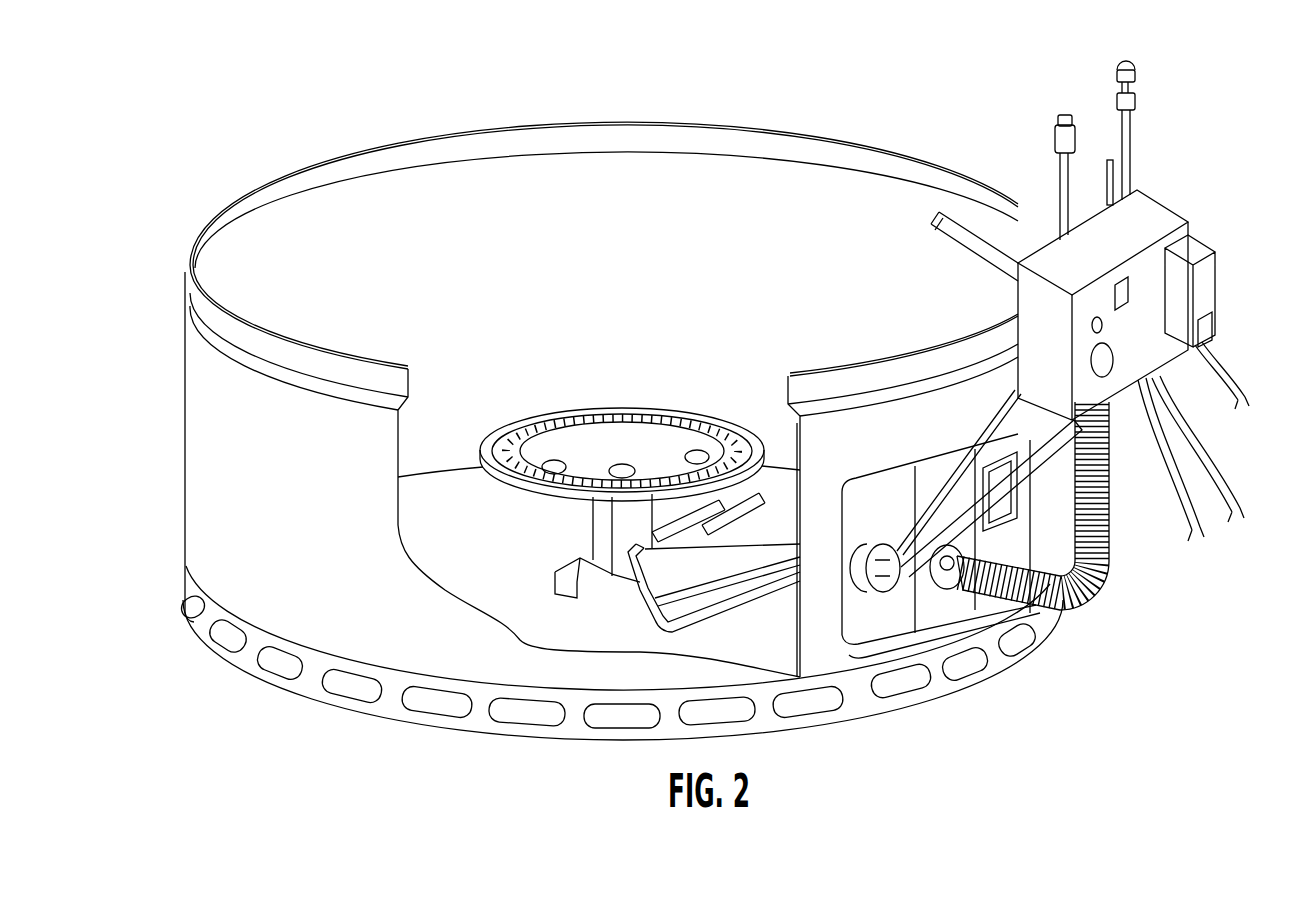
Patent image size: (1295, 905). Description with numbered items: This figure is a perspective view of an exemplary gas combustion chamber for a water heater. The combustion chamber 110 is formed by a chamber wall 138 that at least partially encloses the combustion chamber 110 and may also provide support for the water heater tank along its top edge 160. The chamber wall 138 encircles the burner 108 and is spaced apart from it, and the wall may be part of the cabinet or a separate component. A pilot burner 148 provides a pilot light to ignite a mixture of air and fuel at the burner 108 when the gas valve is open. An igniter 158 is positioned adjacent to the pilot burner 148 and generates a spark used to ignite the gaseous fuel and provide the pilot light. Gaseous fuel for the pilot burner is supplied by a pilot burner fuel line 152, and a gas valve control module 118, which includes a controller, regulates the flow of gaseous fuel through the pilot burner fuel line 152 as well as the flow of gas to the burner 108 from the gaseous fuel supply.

The combustion chamber 110 is at (412, 196).
The top edge 160 is at (756, 130).
The chamber wall 138 is at (641, 268).
The gas valve control module 118 is at (1157, 215).
The burner 108 is at (623, 408).
The pilot burner 148 is at (735, 525).
The pilot burner fuel line 152 is at (755, 545).
The igniter 158 is at (720, 530).